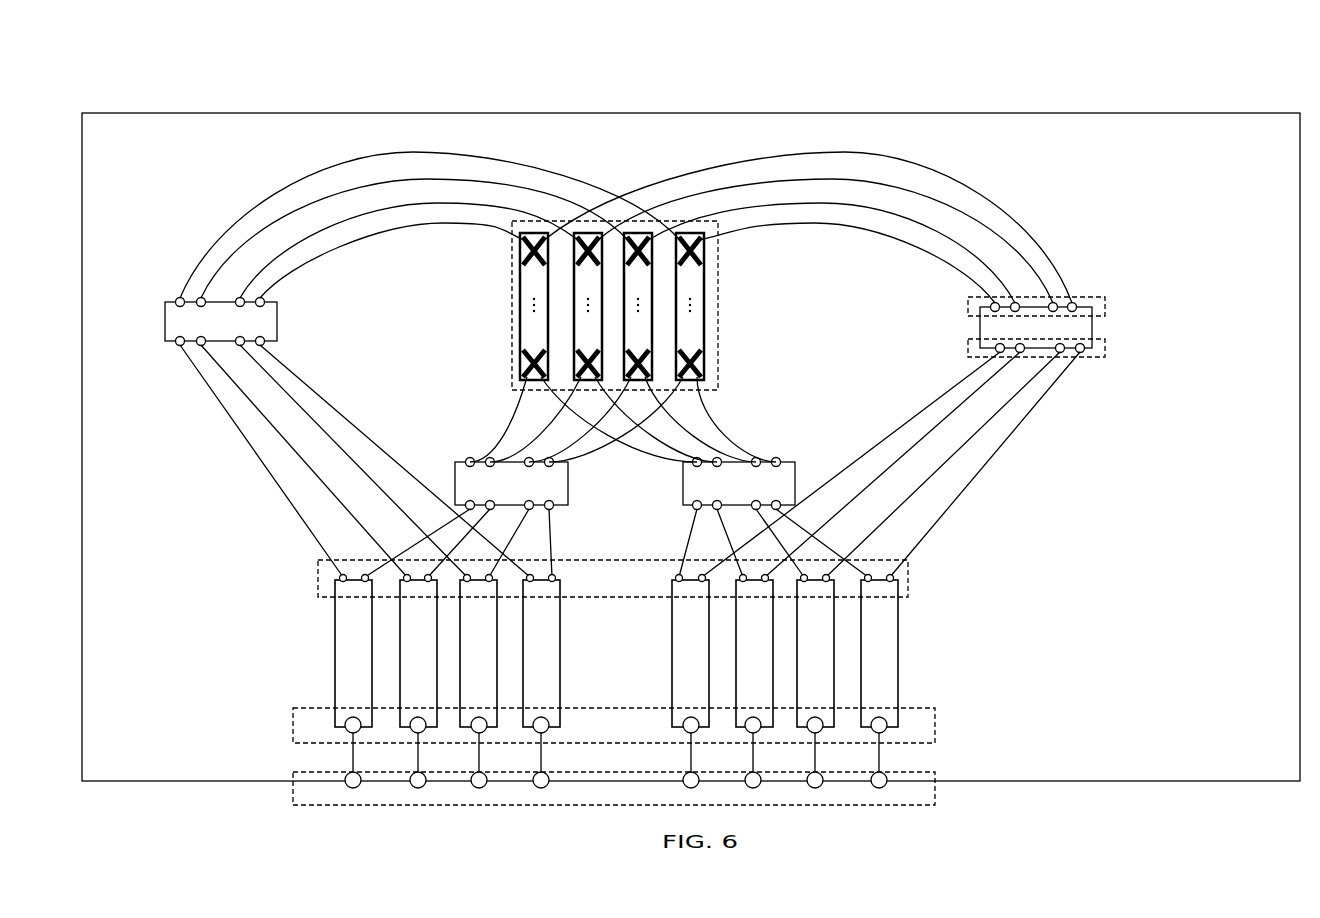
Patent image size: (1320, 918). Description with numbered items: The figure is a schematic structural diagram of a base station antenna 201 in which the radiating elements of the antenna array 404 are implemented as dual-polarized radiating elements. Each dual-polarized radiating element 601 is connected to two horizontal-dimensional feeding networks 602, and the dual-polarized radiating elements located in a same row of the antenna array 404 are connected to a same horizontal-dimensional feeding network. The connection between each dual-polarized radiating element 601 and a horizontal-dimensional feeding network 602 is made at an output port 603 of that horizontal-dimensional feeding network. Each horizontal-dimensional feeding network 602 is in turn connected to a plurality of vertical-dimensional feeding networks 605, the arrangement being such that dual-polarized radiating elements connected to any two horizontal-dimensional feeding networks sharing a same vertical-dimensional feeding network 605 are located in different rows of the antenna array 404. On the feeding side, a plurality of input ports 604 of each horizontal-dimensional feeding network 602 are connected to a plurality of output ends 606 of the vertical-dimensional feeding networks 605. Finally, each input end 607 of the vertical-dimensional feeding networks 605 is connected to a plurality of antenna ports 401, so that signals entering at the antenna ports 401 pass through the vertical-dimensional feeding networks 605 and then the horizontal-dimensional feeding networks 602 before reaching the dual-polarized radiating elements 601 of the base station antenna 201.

The base station antenna 201 is at (688, 113).
The antenna array 404 is at (632, 305).
The dual-polarized radiating element 601 is at (698, 262).
The horizontal-dimensional feeding network 602 is at (277, 320).
The output port of the horizontal-dimensional feeding network 603 is at (1100, 297).
The input port of the horizontal-dimensional feeding network 604 is at (1092, 357).
The vertical-dimensional feeding network 605 is at (1000, 586).
The output end of the vertical-dimensional feeding network 606 is at (908, 575).
The input end of the vertical-dimensional feeding network 607 is at (292, 715).
The antenna port 401 is at (935, 797).